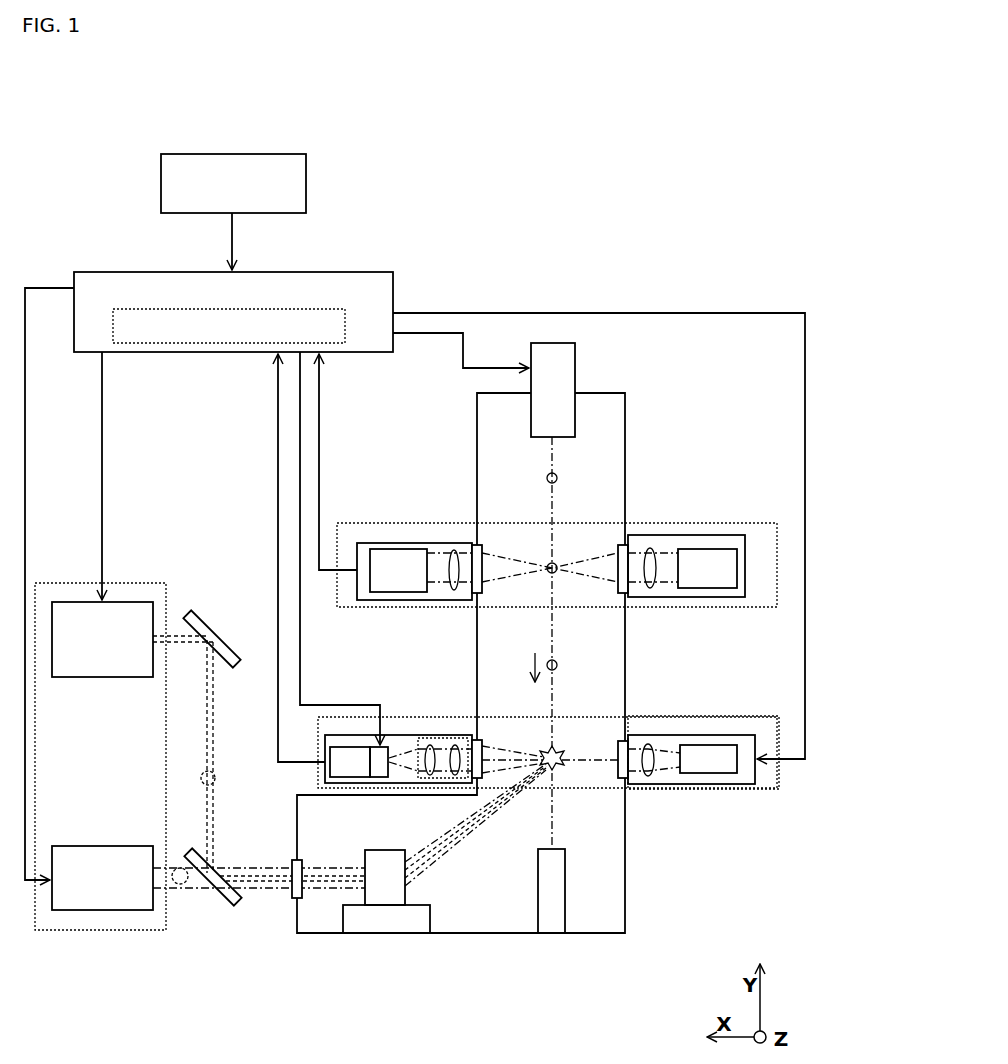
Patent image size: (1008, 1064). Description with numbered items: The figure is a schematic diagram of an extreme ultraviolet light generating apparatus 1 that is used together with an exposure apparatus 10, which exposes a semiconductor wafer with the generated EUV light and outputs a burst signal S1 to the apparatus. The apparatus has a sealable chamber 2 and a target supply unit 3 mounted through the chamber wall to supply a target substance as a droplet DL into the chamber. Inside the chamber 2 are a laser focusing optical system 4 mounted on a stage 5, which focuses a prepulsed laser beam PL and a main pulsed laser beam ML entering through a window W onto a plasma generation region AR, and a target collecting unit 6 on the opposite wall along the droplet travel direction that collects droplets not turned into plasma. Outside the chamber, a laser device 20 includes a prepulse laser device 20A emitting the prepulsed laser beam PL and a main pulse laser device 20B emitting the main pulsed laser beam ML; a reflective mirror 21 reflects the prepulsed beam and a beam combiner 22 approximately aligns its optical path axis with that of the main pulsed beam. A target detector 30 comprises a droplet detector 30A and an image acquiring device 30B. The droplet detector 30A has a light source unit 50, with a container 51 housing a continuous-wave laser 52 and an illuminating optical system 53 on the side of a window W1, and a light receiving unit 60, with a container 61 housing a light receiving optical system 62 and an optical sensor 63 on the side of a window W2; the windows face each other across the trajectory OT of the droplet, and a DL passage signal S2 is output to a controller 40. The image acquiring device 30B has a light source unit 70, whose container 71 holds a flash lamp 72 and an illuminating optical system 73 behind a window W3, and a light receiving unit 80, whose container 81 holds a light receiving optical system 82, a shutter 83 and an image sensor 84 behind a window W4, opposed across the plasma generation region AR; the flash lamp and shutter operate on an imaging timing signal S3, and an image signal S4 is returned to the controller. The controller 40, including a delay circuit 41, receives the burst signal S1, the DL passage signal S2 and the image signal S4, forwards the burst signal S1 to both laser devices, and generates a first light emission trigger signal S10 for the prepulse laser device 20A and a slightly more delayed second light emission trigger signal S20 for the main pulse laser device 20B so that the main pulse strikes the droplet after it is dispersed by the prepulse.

The extreme ultraviolet light generating apparatus 1 is at (703, 177).
The chamber 2 is at (625, 419).
The target supply unit 3 is at (575, 373).
The laser focusing optical system 4 is at (383, 892).
The stage 5 is at (415, 922).
The target collecting unit 6 is at (550, 920).
The exposure apparatus 10 is at (235, 154).
The laser device 20 is at (142, 582).
The prepulse laser device 20A is at (118, 678).
The main pulse laser device 20B is at (118, 846).
The reflective mirror 21 is at (223, 650).
The beam combiner 22 is at (232, 900).
The target detector 30 is at (739, 632).
The droplet detector 30A is at (758, 607).
The image acquiring device 30B is at (758, 714).
The controller 40 is at (348, 272).
The delay circuit 41 is at (305, 308).
The light source unit 50 is at (675, 468).
The container 51 is at (738, 535).
The continuous-wave laser 52 is at (705, 555).
The illuminating optical system 53 is at (655, 548).
The light receiving unit 60 is at (350, 466).
The container 61 is at (372, 543).
The light receiving optical system 62 is at (401, 557).
The optical sensor 63 is at (452, 549).
The light source unit 70 is at (673, 836).
The container 71 is at (740, 784).
The flash lamp 72 is at (705, 772).
The illuminating optical system 73 is at (650, 775).
The light receiving unit 80 is at (318, 656).
The container 81 is at (330, 733).
The light receiving optical system 82 is at (424, 738).
The shutter 83 is at (383, 750).
The image sensor 84 is at (355, 752).
The window W is at (296, 860).
The window W1 is at (630, 543).
The window W2 is at (474, 544).
The window W3 is at (630, 741).
The window W4 is at (475, 740).
The droplet DL is at (557, 477).
The trajectory OT is at (556, 637).
The plasma generation region AR is at (568, 736).
The prepulsed laser beam PL is at (218, 779).
The main pulsed laser beam ML is at (178, 888).
The burst signal S1 is at (228, 247).
The DL passage signal S2 is at (322, 403).
The imaging timing signal S3 is at (605, 312).
The image signal S4 is at (277, 553).
The first light emission trigger signal S10 is at (105, 500).
The second light emission trigger signal S20 is at (30, 440).